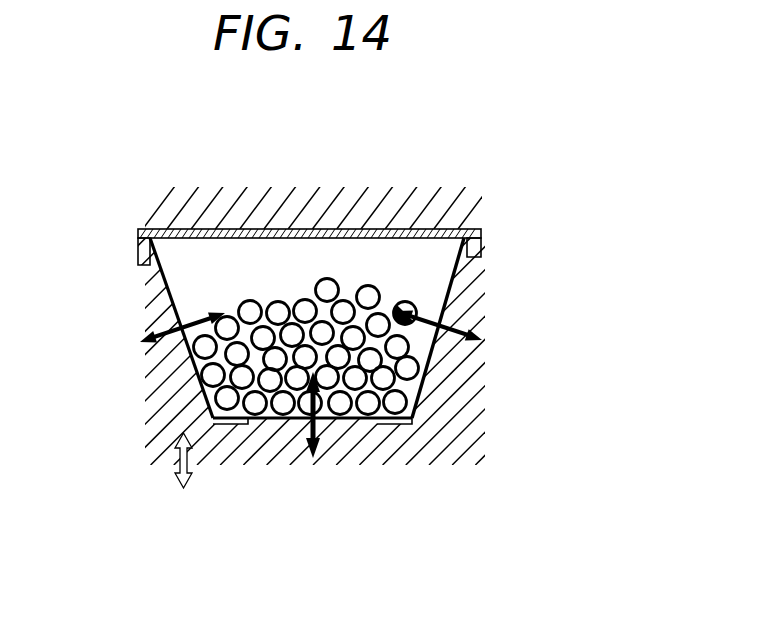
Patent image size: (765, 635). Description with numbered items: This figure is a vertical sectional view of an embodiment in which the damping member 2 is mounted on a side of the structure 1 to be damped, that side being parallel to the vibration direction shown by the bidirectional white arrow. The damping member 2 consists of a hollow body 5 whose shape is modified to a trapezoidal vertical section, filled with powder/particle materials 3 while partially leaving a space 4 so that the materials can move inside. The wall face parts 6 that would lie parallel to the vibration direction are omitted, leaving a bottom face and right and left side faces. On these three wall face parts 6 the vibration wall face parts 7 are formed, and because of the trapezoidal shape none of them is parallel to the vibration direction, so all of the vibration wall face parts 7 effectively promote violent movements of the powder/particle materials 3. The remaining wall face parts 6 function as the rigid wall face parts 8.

The structure 1 is at (303, 192).
The damping member 2 is at (189, 229).
The powder/particle materials 3 is at (406, 302).
The space 4 is at (262, 247).
The hollow body 5 is at (450, 298).
The wall face parts 6 is at (291, 422).
The vibration wall face part 7 is at (350, 420).
The rigid wall face parts 8 is at (397, 228).